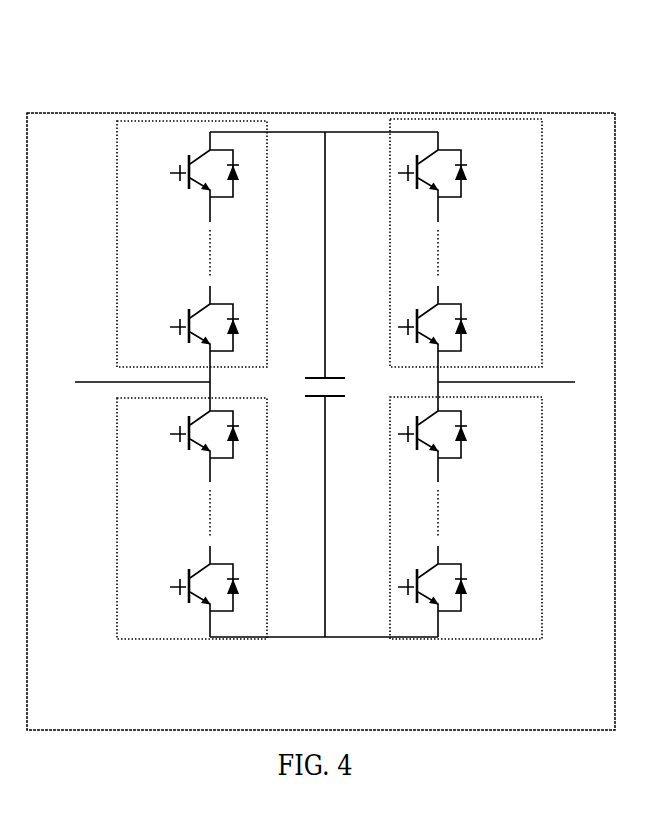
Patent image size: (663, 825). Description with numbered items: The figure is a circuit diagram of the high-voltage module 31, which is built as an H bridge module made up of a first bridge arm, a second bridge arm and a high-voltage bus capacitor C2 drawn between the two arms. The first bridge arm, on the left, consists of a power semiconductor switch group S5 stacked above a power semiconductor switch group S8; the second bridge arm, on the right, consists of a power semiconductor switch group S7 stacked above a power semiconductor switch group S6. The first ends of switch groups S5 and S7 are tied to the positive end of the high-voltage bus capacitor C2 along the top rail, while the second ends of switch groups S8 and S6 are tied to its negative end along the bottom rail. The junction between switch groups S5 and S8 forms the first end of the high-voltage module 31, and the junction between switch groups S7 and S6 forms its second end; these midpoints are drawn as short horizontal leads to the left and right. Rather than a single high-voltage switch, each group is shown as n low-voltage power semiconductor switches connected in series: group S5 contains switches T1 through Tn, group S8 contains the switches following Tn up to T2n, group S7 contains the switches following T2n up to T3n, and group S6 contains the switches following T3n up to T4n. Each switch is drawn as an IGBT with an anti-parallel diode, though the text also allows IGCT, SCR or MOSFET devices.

The high-voltage module 31 is at (335, 112).
The high-voltage bus capacitor C2 is at (334, 370).
The power semiconductor switch group S5 is at (168, 244).
The power semiconductor switch group S6 is at (486, 518).
The power semiconductor switch group S7 is at (486, 243).
The power semiconductor switch group S8 is at (168, 518).
The low-voltage power semiconductor switch T1 is at (189, 173).
The low-voltage power semiconductor switch Tn is at (189, 327).
The low-voltage power semiconductor switch T2n is at (180, 587).
The low-voltage power semiconductor switch T3n is at (461, 327).
The low-voltage power semiconductor switch T4n is at (457, 587).